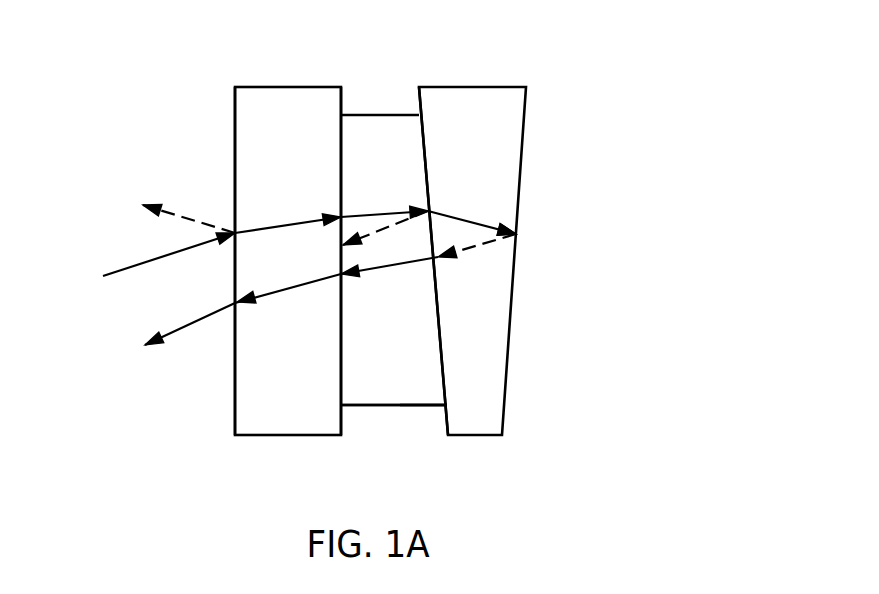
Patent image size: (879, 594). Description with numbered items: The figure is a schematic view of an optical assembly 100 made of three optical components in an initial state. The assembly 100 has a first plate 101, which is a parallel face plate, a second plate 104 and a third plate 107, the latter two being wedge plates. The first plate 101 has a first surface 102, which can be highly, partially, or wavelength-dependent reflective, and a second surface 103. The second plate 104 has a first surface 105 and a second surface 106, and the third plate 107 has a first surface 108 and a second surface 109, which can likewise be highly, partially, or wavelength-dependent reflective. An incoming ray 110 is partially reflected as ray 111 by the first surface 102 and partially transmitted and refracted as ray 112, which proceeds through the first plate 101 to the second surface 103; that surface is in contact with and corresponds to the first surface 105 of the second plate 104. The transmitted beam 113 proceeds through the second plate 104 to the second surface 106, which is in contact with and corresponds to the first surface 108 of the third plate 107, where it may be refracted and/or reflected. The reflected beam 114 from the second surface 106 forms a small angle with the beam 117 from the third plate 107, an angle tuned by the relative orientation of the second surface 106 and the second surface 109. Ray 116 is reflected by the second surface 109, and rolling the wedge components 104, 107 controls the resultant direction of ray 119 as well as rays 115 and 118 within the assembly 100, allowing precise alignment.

The assembly 100 is at (540, 70).
The first plate 101 is at (273, 262).
The first surface 102 is at (235, 108).
The second surface 103 is at (340, 178).
The second plate 104 is at (371, 366).
The first surface 105 is at (343, 383).
The second surface 106 is at (443, 388).
The third plate 107 is at (453, 308).
The first surface 108 is at (425, 160).
The second surface 109 is at (528, 232).
The incoming ray 110 is at (128, 268).
The reflected ray 111 is at (187, 218).
The transmitted and refracted ray 112 is at (290, 223).
The transmitted beam 113 is at (368, 207).
The reflected beam 114 is at (377, 230).
The ray 115 is at (465, 217).
The ray 116 is at (472, 250).
The beam 117 is at (400, 264).
The ray 118 is at (270, 295).
The ray 119 is at (165, 343).